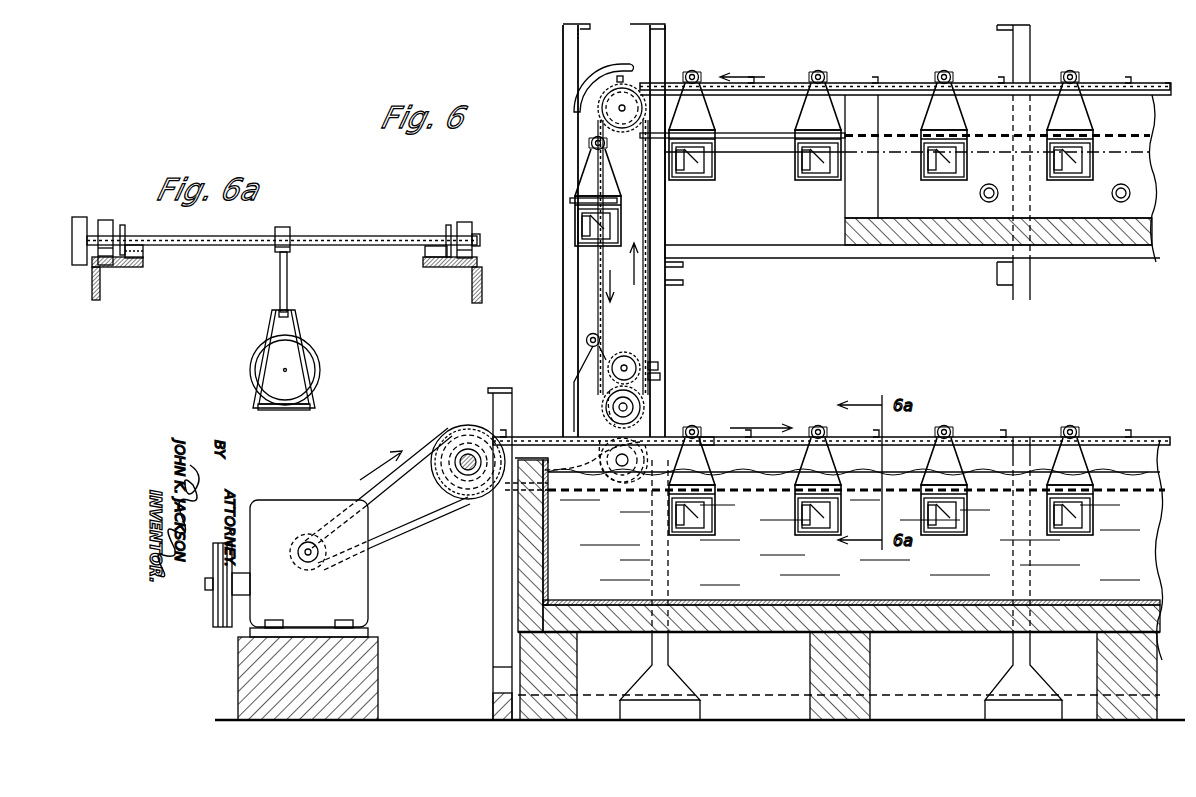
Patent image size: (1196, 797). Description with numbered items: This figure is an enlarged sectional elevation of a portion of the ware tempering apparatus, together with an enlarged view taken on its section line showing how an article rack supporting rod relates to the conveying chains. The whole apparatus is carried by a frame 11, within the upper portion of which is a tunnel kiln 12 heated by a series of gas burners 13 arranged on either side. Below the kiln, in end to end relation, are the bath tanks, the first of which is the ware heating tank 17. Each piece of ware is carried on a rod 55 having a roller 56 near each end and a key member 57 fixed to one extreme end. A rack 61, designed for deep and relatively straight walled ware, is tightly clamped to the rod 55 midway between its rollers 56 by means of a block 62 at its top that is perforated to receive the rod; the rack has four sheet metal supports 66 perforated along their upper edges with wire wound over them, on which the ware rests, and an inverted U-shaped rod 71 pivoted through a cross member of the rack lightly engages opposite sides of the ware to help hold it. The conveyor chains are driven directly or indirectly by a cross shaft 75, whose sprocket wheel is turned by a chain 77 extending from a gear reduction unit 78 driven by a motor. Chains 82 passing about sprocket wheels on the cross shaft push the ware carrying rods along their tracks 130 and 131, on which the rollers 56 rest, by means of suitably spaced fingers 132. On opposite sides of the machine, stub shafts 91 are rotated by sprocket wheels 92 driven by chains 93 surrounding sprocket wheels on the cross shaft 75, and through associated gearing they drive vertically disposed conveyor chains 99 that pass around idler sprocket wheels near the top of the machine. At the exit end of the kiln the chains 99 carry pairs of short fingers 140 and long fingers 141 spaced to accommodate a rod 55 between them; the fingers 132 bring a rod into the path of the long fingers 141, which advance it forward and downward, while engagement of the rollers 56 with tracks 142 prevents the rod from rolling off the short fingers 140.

In FIG. 6, the frame 11 is at (1030, 58).
In FIG. 6, the tunnel kiln 12 is at (845, 232).
In FIG. 6, the gas burners 13 is at (980, 193).
In FIG. 6, the ware heating tank 17 is at (530, 570).
In FIG. 6A, the rod 55 is at (368, 238).
In FIG. 6A, the roller 56 is at (105, 220).
In FIG. 6A, the key member 57 is at (80, 217).
In FIG. 6, the rack 61 is at (697, 183).
In FIG. 6A, the rack 61 is at (287, 273).
In FIG. 6A, the block 62 is at (291, 238).
In FIG. 6A, the sheet metal supports 66 is at (270, 410).
In FIG. 6A, the inverted U-shaped rod 71 is at (300, 325).
In FIG. 6, the cross shaft 75 is at (456, 470).
In FIG. 6, the chain 77 is at (422, 448).
In FIG. 6, the gear reduction unit 78 is at (296, 508).
In FIG. 6A, the chains 82 is at (143, 251).
In FIG. 6, the stub shafts 91 is at (622, 470).
In FIG. 6, the sprocket wheels 92 is at (630, 448).
In FIG. 6, the chains 93 is at (542, 437).
In FIG. 6, the vertically disposed conveyor chains 99 is at (600, 297).
In FIG. 6, the track 130 is at (712, 445).
In FIG. 6A, the track 130 is at (110, 262).
In FIG. 6, the track 131 is at (762, 143).
In FIG. 6A, the fingers 132 is at (125, 229).
In FIG. 6, the fingers 140 is at (655, 365).
In FIG. 6, the fingers 141 is at (660, 377).
In FIG. 6, the tracks 142 is at (583, 262).